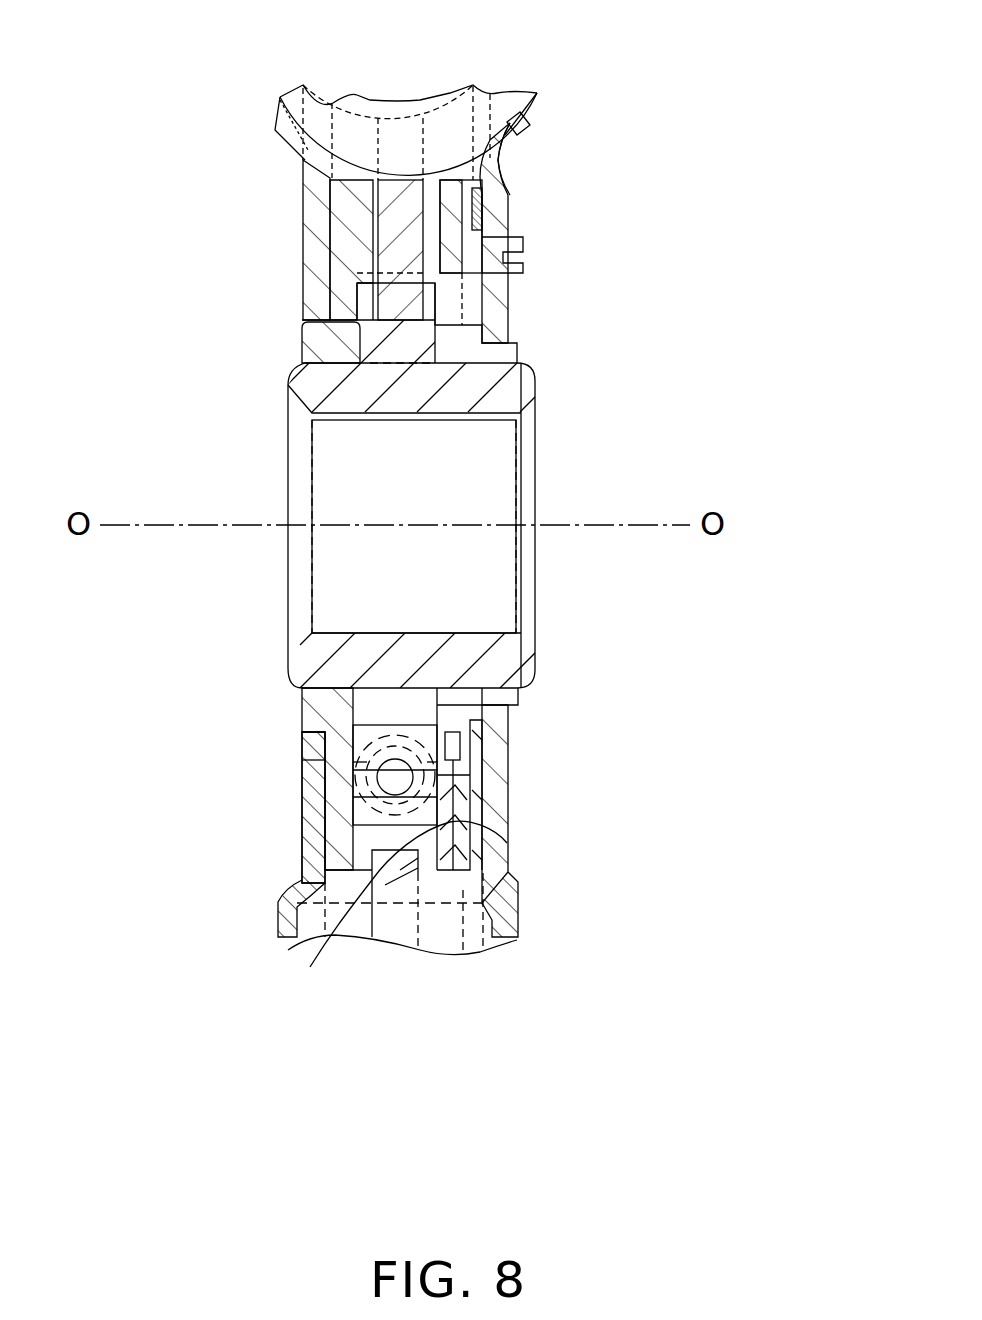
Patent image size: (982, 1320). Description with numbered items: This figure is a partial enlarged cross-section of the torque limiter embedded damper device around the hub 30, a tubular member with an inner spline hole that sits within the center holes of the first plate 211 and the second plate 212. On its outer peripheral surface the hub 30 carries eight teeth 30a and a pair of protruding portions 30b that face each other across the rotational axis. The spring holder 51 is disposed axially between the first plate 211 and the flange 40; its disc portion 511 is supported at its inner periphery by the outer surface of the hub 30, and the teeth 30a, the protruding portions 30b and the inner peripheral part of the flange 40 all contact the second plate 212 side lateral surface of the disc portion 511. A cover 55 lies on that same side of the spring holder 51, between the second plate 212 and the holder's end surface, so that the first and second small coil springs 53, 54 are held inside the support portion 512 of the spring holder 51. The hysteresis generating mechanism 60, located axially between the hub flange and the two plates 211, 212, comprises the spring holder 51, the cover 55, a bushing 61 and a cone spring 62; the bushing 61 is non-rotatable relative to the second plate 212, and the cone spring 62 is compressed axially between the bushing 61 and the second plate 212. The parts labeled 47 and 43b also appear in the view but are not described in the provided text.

The outer tube 47 is at (497, 80).
The first plate 211 is at (278, 128).
The second plate 212 is at (540, 100).
The flange 40 is at (398, 203).
The disc portion 511 is at (350, 233).
The bushing 61 is at (463, 212).
The cone spring 62 is at (478, 228).
The teeth 30a is at (428, 302).
The spring holder 51 is at (296, 340).
The hub 30 is at (515, 385).
The protruding portions 30b is at (423, 713).
The hysteresis generating mechanism 60 is at (296, 769).
The first small coil spring 53 is at (363, 803).
The second small coil spring 54 is at (241, 846).
The cover 55 is at (445, 792).
The lower lip 43b is at (470, 884).
The support portions 512 is at (380, 887).